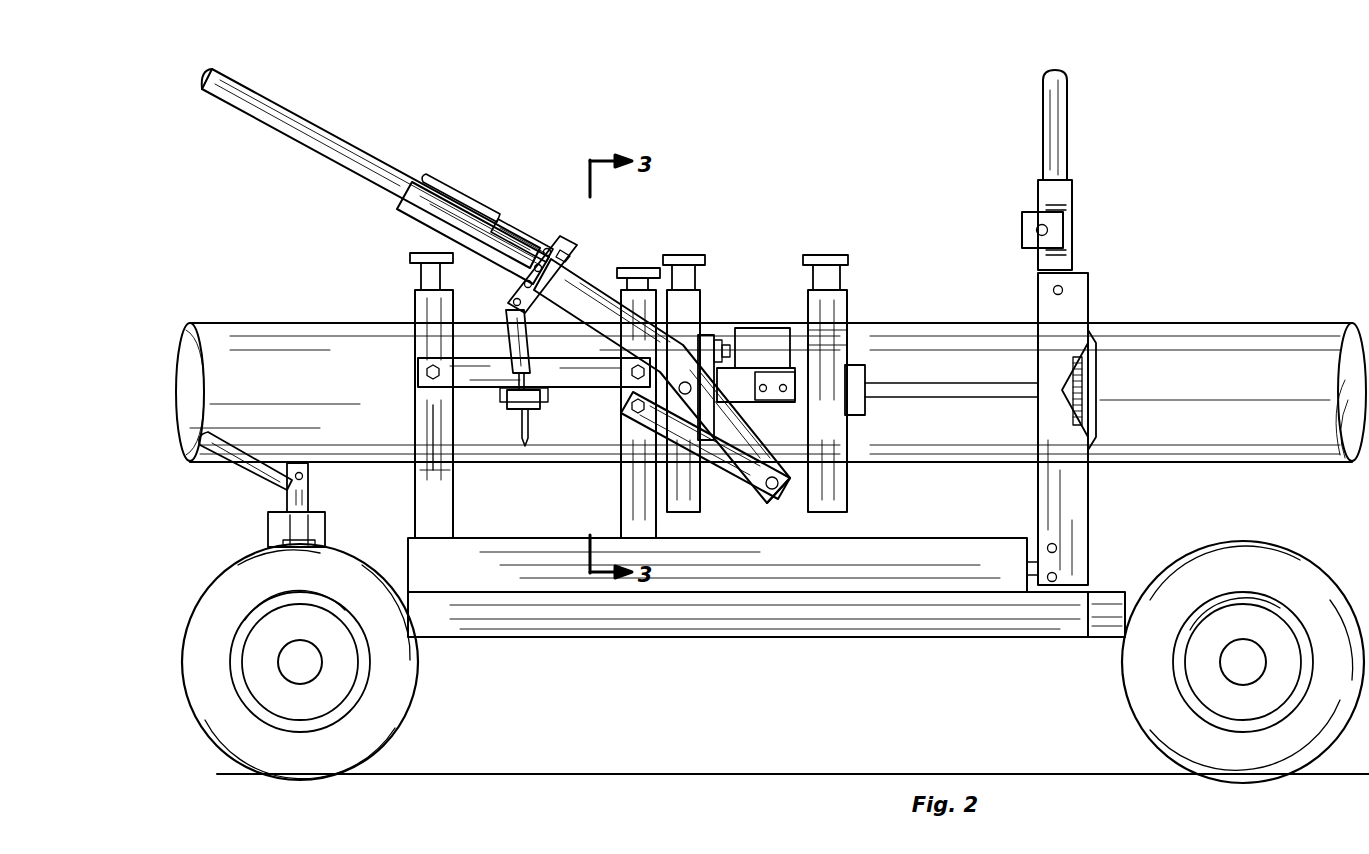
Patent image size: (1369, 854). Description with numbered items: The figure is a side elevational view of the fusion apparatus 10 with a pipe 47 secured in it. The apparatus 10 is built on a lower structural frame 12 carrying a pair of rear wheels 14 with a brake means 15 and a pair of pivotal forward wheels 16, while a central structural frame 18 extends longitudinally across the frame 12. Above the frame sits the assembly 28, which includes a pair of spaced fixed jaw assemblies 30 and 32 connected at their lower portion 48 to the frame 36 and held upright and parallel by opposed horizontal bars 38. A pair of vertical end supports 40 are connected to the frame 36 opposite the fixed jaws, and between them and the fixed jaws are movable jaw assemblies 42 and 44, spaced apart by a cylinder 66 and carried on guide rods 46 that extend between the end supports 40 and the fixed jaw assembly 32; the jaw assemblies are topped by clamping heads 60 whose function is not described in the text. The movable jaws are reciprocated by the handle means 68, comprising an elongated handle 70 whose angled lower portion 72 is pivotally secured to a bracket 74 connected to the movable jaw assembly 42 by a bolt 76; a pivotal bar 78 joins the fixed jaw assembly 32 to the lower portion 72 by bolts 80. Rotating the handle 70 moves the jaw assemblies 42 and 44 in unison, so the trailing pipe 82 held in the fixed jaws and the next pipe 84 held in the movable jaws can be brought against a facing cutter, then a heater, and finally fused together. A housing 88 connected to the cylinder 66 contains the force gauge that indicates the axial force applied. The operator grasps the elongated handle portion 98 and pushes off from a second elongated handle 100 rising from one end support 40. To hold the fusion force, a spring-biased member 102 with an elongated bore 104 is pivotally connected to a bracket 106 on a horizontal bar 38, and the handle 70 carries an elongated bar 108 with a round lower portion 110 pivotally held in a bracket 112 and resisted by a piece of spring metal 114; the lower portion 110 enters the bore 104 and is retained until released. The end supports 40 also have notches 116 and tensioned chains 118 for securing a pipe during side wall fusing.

The fusion apparatus 10 is at (858, 140).
The lower structural frame 12 is at (918, 646).
The rear wheels 14 is at (400, 700).
The brake means 15 is at (290, 496).
The forward wheels 16 is at (1143, 705).
The central structural frame 18 is at (1096, 638).
The assembly 28 is at (558, 167).
The fixed jaw assembly 30 is at (623, 412).
The fixed jaw assembly 32 is at (620, 305).
The frame 36 is at (790, 580).
The horizontal bars 38 is at (583, 377).
The vertical end supports 40 is at (1078, 295).
The movable jaw assembly 42 is at (697, 305).
The movable jaw assembly 44 is at (848, 300).
The guide rods 46 is at (1016, 385).
The pipe 47 is at (955, 297).
The lower portion 48 is at (454, 492).
The adjusting screw head 60 is at (424, 252).
The cylinder 66 is at (868, 378).
The handle means 68 is at (476, 178).
The handle 70 is at (580, 305).
The angled lower portion 72 is at (745, 400).
The bracket 74 is at (705, 340).
The bolt 76 is at (712, 462).
The pivotal bar 78 is at (752, 490).
The bolts 80 is at (630, 415).
The pipe 82 is at (278, 328).
The pipe 84 is at (1226, 343).
The housing 88 is at (777, 342).
The elongated handle portion 98 is at (300, 128).
The second elongated handle 100 is at (1068, 104).
The member 102 is at (535, 410).
The bore 104 is at (1036, 228).
The bracket 106 is at (548, 404).
The elongated bar 108 is at (519, 238).
The round lower portion 110 is at (457, 199).
The bracket 112 is at (560, 240).
The piece of spring metal 114 is at (566, 258).
The notches 116 is at (1083, 380).
The chains 118 is at (1083, 405).